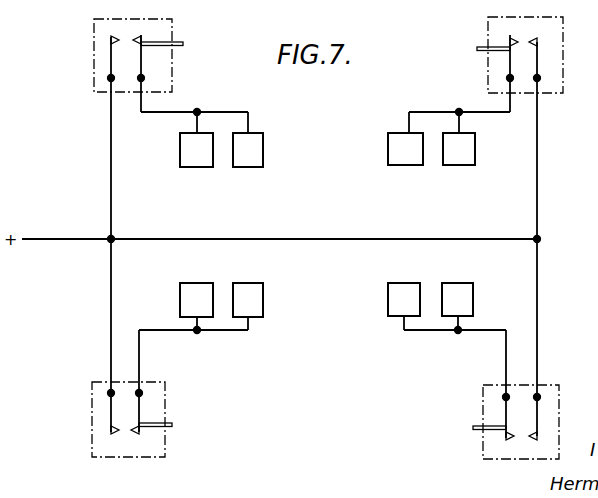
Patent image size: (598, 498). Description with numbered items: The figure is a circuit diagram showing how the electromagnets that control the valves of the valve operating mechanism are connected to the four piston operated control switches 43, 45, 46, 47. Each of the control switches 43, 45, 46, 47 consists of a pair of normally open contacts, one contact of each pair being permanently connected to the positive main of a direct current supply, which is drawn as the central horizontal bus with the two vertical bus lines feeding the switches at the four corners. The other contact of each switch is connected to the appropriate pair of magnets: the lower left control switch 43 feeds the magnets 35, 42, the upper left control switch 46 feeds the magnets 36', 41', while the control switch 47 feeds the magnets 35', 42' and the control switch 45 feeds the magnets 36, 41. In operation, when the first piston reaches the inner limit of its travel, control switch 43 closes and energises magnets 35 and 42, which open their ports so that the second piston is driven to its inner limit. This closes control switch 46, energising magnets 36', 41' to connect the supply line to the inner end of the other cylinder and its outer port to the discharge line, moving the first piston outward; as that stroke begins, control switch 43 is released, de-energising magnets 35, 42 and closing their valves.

The control switch 46 is at (95, 61).
The control switch 47 is at (562, 61).
The control switch 43 is at (92, 421).
The control switch 45 is at (560, 418).
The magnet 36 is at (196, 286).
The magnet 41 is at (248, 286).
The magnet 35 is at (404, 285).
The magnet 42 is at (457, 285).
The magnet 36' is at (196, 168).
The magnet 41' is at (248, 168).
The magnet 35' is at (403, 168).
The magnet 42' is at (457, 166).